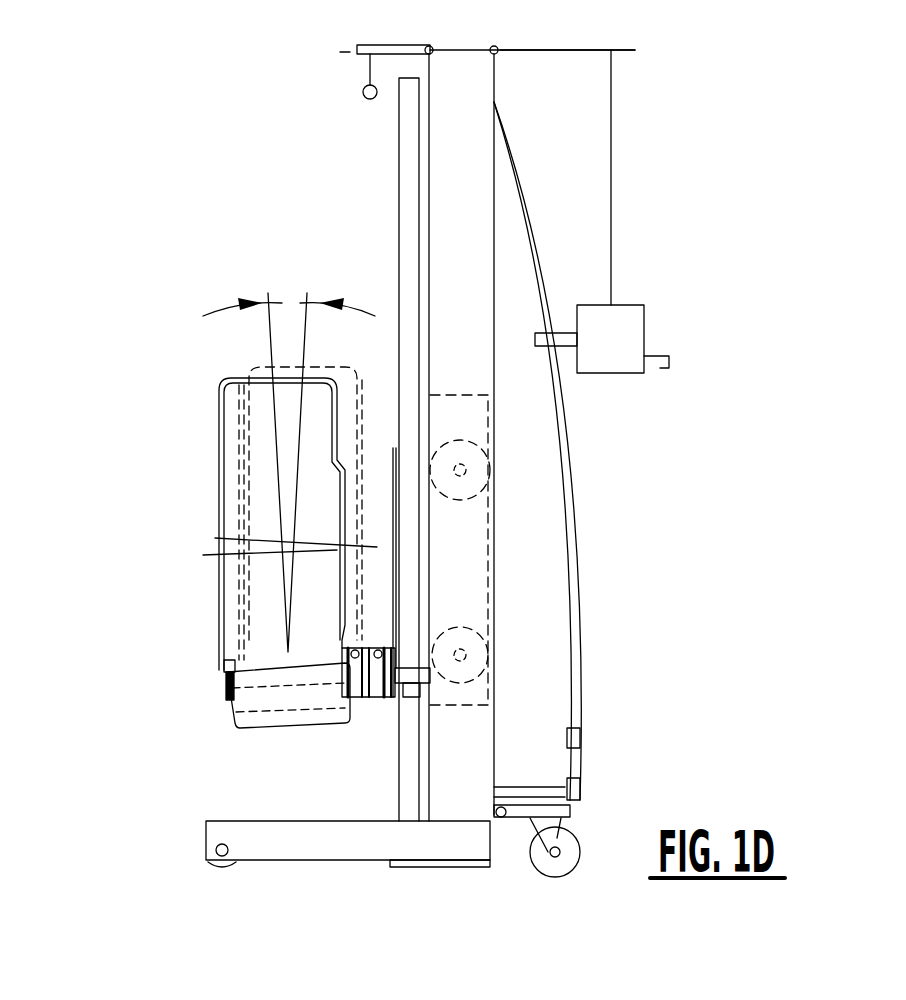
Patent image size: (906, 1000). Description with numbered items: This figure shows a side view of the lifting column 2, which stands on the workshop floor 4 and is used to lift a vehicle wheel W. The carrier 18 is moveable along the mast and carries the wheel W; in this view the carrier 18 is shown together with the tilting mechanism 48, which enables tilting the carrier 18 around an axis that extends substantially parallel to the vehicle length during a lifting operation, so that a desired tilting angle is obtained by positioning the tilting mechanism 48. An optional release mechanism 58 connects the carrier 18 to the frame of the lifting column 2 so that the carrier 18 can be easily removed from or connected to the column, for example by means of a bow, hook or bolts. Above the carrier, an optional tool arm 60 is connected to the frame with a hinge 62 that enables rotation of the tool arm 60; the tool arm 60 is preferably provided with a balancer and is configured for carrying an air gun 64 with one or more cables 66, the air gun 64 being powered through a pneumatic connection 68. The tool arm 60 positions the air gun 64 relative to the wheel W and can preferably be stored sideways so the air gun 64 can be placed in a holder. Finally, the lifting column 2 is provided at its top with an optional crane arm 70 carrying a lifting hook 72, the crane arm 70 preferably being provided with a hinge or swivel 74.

The lifting column 2 is at (198, 143).
The workshop floor 4 is at (480, 578).
The carrier 18 is at (192, 683).
The tilting mechanism 48 is at (373, 708).
The release mechanism 58 is at (385, 645).
The tool arm 60 is at (552, 50).
The hinge 62 is at (497, 52).
The air gun 64 is at (630, 330).
The cables 66 is at (611, 152).
The pneumatic connection 68 is at (664, 366).
The crane arm 70 is at (332, 52).
The lifting hook 72 is at (371, 104).
The hinge or swivel 74 is at (427, 46).
The wheel W is at (232, 420).